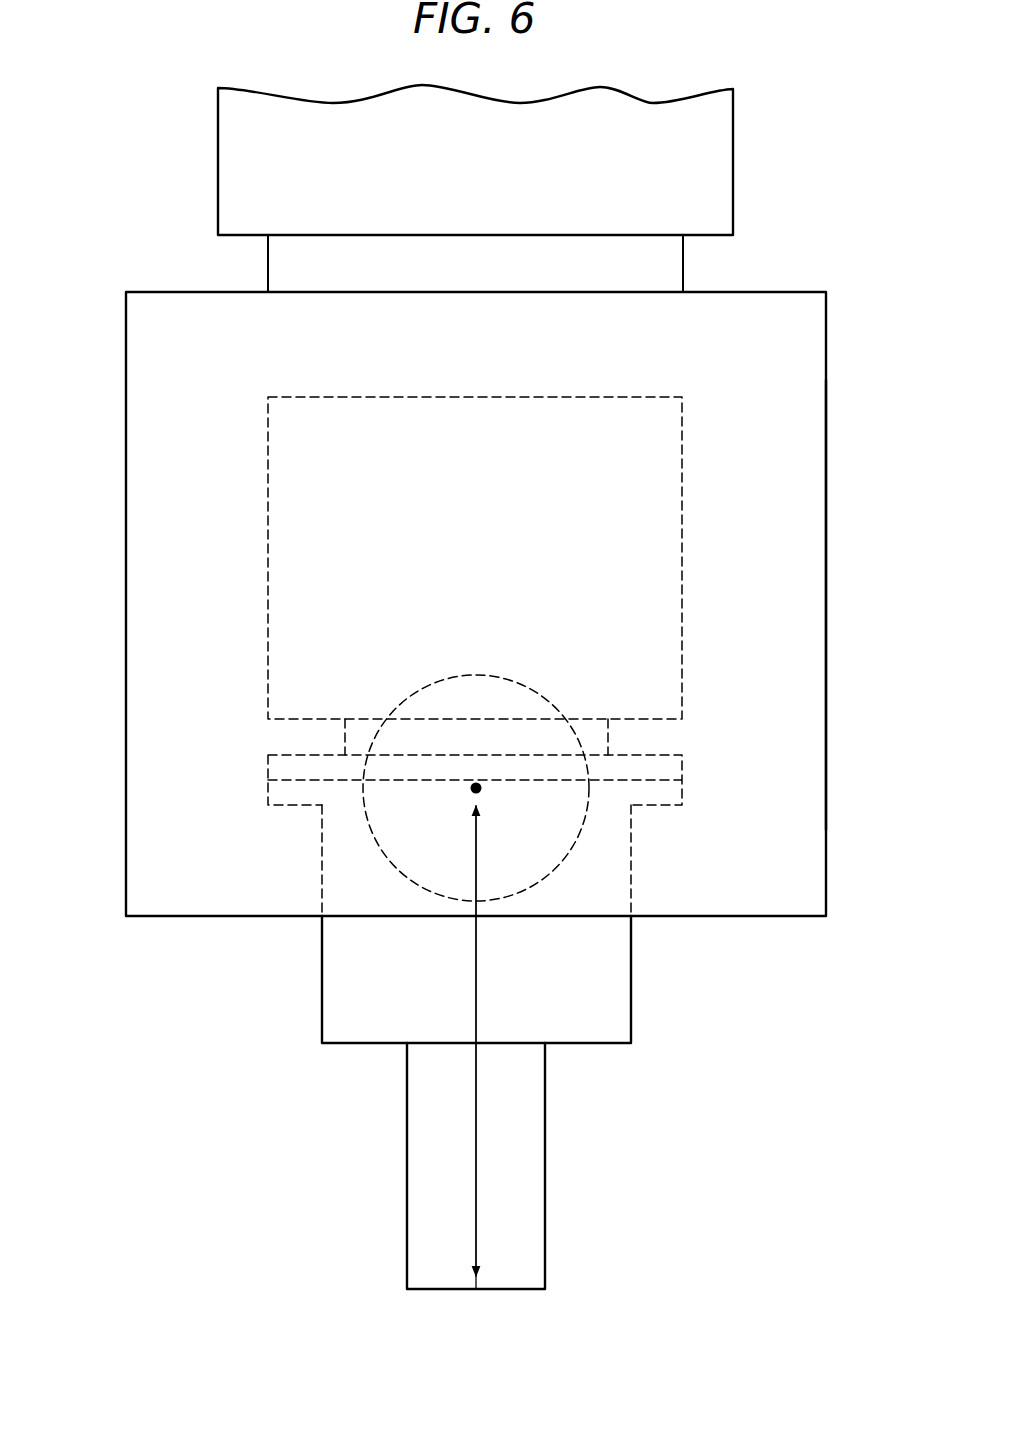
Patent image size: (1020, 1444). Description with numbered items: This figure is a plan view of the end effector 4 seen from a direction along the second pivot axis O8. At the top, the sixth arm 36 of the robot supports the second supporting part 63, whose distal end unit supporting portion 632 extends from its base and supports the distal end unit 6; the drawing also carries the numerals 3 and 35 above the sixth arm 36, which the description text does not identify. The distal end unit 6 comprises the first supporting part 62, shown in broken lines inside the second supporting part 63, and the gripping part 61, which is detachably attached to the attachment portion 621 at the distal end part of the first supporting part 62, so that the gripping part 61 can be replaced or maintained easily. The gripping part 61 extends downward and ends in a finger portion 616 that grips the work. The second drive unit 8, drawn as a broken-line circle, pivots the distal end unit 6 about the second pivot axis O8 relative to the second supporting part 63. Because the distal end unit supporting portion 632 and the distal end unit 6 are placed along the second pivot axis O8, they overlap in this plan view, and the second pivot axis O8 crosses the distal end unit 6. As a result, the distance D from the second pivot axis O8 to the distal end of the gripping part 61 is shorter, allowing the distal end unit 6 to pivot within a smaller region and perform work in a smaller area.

The robot arm 3 is at (137, 206).
The arm 35 is at (710, 165).
The sixth arm 36 is at (665, 268).
The end effector 4 is at (186, 978).
The second supporting part 63 is at (828, 497).
The distal end unit supporting portion 632 is at (805, 640).
The distal end unit 6 is at (266, 664).
The first supporting part 62 is at (348, 495).
The attachment portion 621 is at (660, 763).
The gripping part 61 is at (352, 966).
The finger portion 616 is at (440, 1274).
The second drive unit 8 is at (527, 835).
The second pivot axis O8 is at (470, 790).